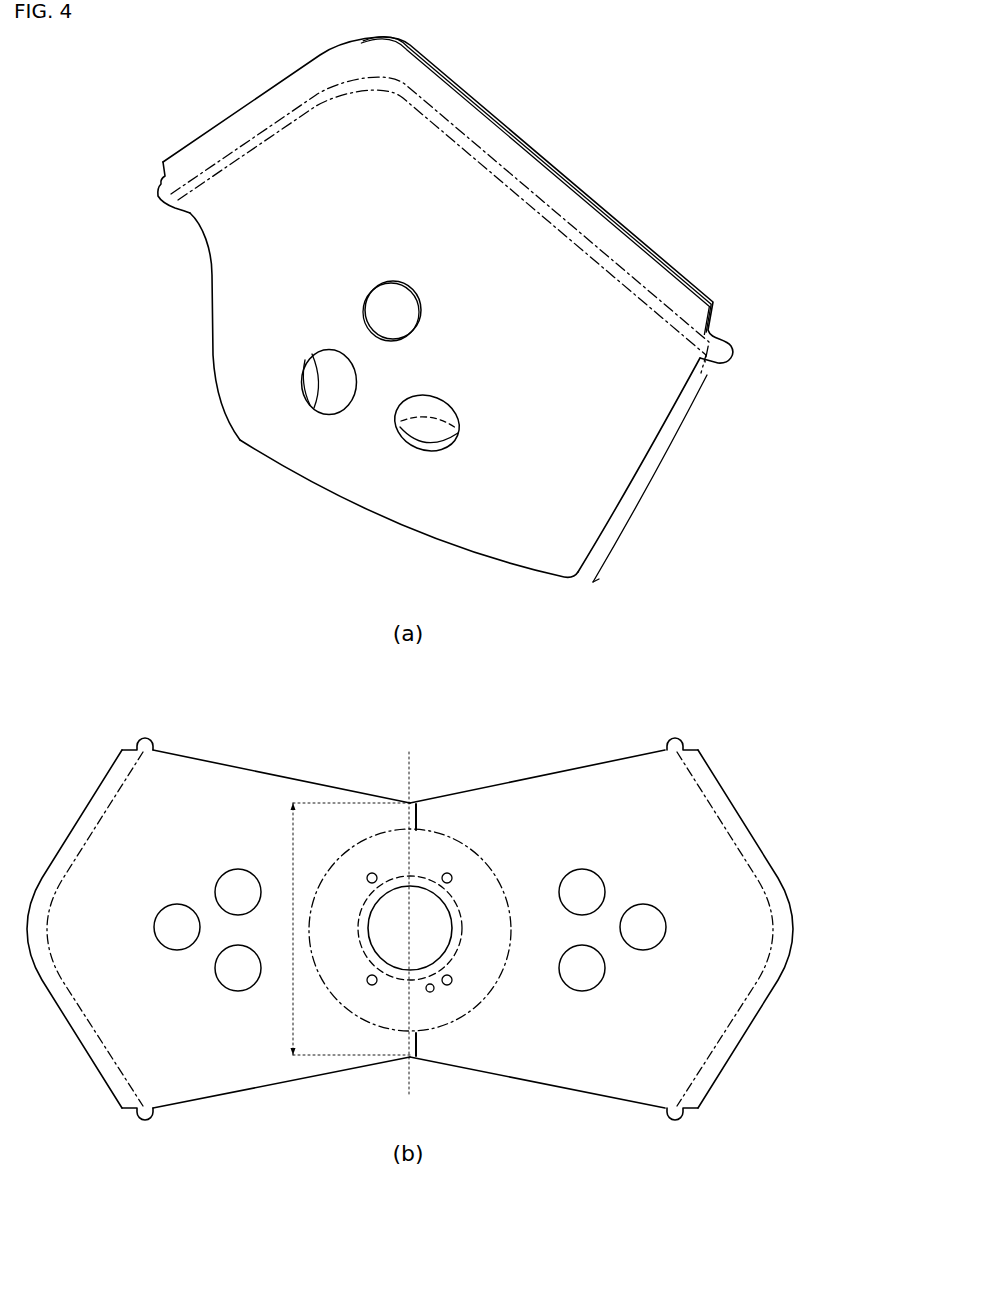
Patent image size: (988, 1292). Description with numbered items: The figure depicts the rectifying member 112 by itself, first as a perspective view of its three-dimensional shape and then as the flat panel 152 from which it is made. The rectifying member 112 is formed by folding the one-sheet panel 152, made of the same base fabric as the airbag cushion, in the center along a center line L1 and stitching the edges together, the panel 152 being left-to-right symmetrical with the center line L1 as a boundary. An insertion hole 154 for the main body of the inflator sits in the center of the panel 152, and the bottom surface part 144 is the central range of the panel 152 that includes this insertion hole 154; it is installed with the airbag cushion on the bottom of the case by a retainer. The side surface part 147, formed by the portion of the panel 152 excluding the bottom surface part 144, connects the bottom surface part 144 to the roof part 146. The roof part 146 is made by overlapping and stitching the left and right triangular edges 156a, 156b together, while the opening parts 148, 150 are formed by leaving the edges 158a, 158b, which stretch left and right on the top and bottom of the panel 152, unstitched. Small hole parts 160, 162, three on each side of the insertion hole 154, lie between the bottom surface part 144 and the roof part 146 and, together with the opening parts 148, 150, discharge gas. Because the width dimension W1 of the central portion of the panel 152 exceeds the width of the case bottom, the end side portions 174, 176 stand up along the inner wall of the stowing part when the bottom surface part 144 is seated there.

The rectifying member 112 is at (184, 104).
The bottom surface part 144 is at (320, 483).
The roof part 146 is at (500, 111).
The side surface part 147 is at (538, 500).
The opening part 148 is at (652, 482).
The opening part 150 is at (188, 229).
The panel 152 is at (213, 762).
The insertion hole 154 is at (450, 923).
The triangular edge 156a is at (80, 825).
The triangular edge 156b is at (740, 820).
The edge 158a is at (315, 1078).
The edge 158b is at (302, 782).
The small hole parts 160 is at (437, 405).
The small hole parts 162 is at (583, 982).
The end side portion 174 is at (418, 1043).
The end side portion 176 is at (420, 818).
The center line L1 is at (408, 912).
The width dimension W1 is at (336, 929).